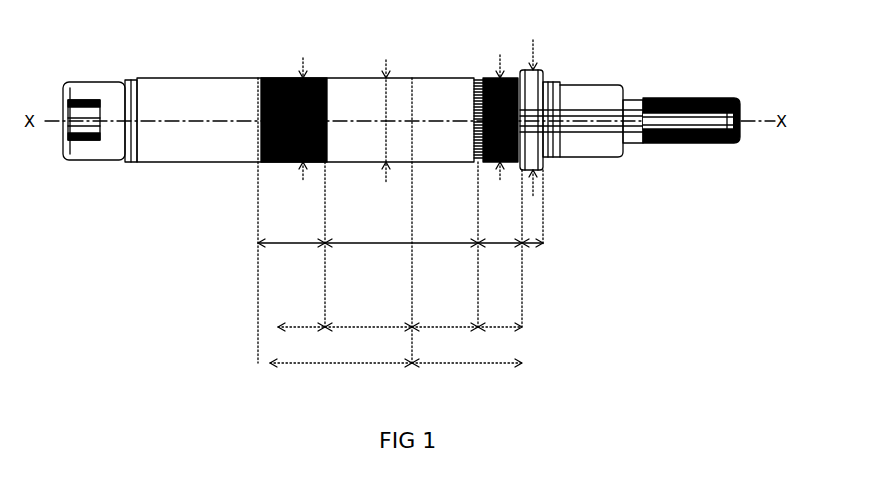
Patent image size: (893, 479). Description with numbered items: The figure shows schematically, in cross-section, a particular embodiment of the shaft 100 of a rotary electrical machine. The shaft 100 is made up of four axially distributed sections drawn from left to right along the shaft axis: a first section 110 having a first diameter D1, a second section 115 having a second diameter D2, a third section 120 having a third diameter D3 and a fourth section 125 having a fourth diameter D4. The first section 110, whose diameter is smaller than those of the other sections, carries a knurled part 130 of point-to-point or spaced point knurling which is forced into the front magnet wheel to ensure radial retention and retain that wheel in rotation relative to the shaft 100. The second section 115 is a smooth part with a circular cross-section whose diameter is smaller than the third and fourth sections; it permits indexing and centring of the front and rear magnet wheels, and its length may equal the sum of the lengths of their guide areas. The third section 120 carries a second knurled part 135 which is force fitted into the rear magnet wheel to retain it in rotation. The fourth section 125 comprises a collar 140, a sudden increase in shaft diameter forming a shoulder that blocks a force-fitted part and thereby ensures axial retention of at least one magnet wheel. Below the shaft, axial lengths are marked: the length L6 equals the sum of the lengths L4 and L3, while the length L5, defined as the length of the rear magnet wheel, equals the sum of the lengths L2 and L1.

The shaft 100 is at (711, 65).
The first section 110 is at (291, 255).
The second section 115 is at (401, 255).
The third section 120 is at (500, 255).
The fourth section 125 is at (539, 255).
The knurled part 130 is at (283, 78).
The knurled part 135 is at (507, 78).
The collar 140 is at (541, 166).
The first diameter D1 is at (313, 109).
The second diameter D2 is at (373, 116).
The third diameter D3 is at (485, 114).
The fourth diameter D4 is at (545, 116).
The length L1 is at (500, 337).
The length L2 is at (445, 337).
The length L3 is at (368, 337).
The length L4 is at (301, 337).
The length of the rear magnet wheel L5 is at (467, 374).
The length L6 is at (341, 374).